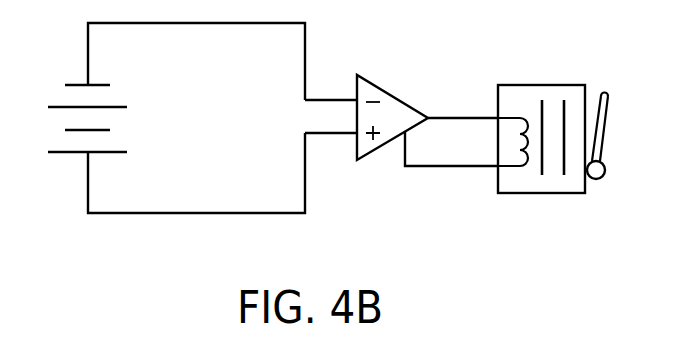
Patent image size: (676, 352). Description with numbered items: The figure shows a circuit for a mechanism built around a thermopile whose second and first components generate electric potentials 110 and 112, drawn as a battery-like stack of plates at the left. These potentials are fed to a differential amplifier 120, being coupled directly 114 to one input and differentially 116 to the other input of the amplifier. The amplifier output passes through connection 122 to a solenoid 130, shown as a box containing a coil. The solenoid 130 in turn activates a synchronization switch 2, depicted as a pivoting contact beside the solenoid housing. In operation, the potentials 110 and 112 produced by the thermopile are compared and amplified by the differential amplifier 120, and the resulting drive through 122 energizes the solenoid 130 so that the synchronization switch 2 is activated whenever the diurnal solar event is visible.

The electric potential of second component 110 is at (77, 154).
The electric potential of first component 112 is at (78, 84).
The direct coupling 114 is at (321, 134).
The differential coupling 116 is at (319, 98).
The differential amplifier 120 is at (387, 93).
The amplifier output connection 122 is at (454, 116).
The solenoid 130 is at (513, 194).
The synchronization switch 2 is at (611, 100).